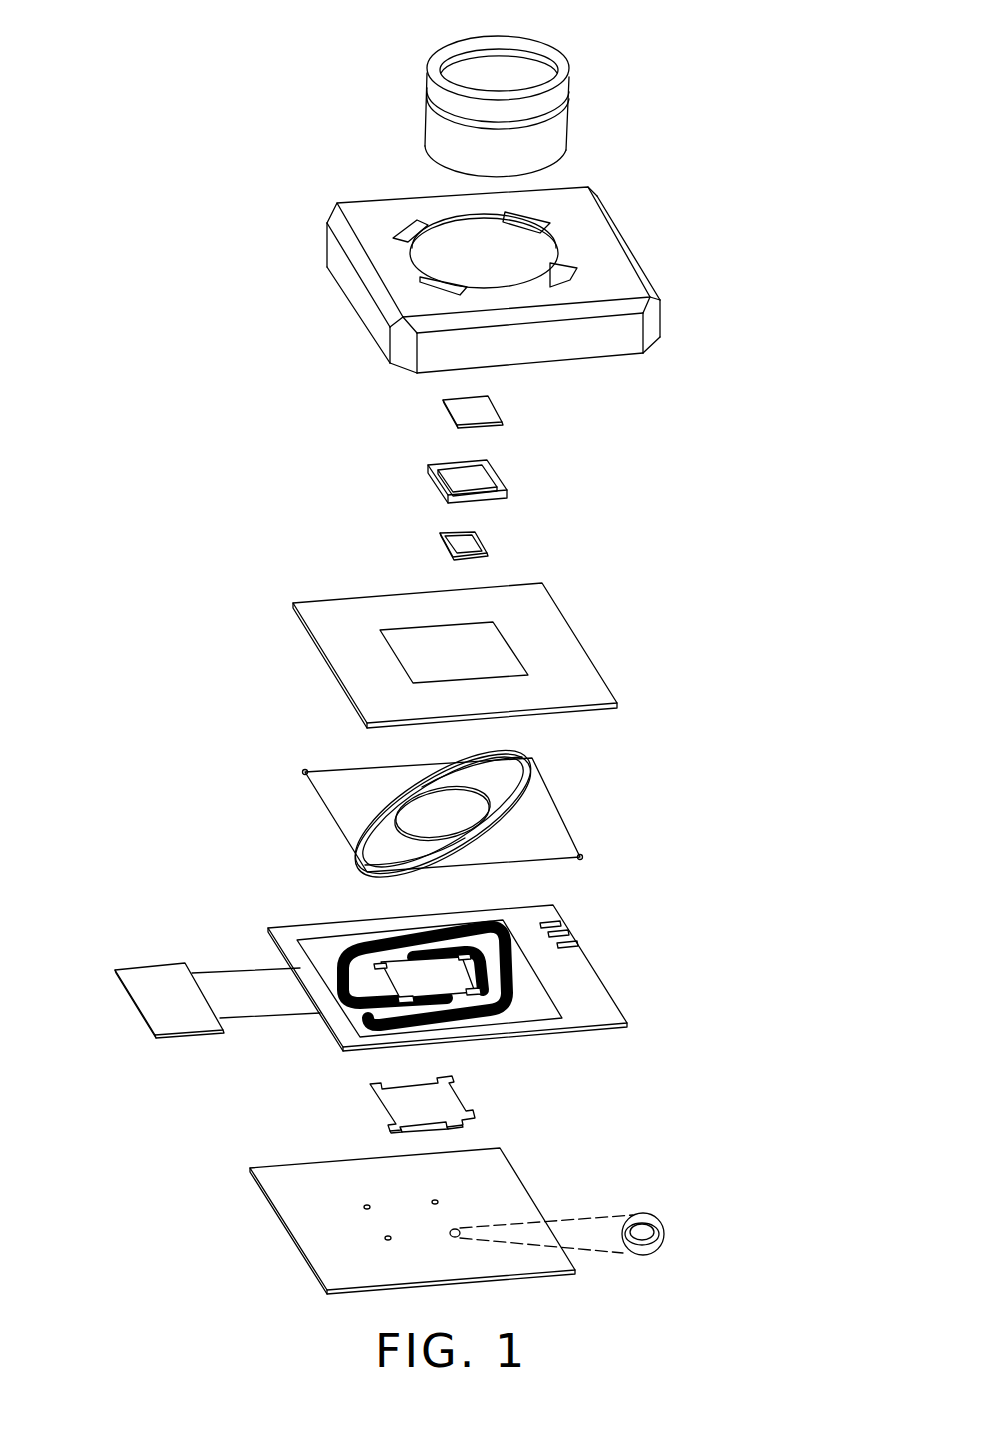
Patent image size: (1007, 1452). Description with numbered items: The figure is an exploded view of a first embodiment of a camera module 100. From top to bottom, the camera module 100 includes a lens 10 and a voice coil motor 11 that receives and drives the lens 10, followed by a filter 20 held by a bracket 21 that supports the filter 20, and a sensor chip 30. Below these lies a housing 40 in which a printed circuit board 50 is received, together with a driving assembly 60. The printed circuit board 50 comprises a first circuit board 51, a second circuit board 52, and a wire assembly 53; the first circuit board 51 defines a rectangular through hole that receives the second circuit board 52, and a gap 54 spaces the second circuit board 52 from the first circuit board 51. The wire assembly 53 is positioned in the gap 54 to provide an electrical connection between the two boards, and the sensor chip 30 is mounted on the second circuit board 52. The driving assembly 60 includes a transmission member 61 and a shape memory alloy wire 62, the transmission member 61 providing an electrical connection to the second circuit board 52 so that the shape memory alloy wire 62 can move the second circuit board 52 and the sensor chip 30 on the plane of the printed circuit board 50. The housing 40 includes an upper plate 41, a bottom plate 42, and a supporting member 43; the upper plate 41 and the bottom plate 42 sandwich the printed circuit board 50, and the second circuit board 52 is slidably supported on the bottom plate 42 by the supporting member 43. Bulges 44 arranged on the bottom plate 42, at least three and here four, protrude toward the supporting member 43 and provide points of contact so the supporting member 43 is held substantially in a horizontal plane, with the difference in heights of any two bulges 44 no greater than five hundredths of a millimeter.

The camera module 100 is at (484, 30).
The lens 10 is at (555, 133).
The voice coil motor 11 is at (593, 230).
The filter 20 is at (487, 412).
The bracket 21 is at (500, 488).
The sensor chip 30 is at (472, 543).
The housing 40 is at (680, 637).
The upper plate 41 is at (567, 672).
The bottom plate 42 is at (500, 1178).
The supporting member 43 is at (425, 1103).
The bulges 44 is at (663, 1233).
The printed circuit board 50 is at (196, 837).
The first circuit board 51 is at (287, 937).
The second circuit board 52 is at (423, 975).
The wire assembly 53 is at (380, 997).
The gap 54 is at (293, 1007).
The driving assembly 60 is at (232, 747).
The transmission member 61 is at (303, 771).
The shape memory alloy wire 62 is at (372, 825).